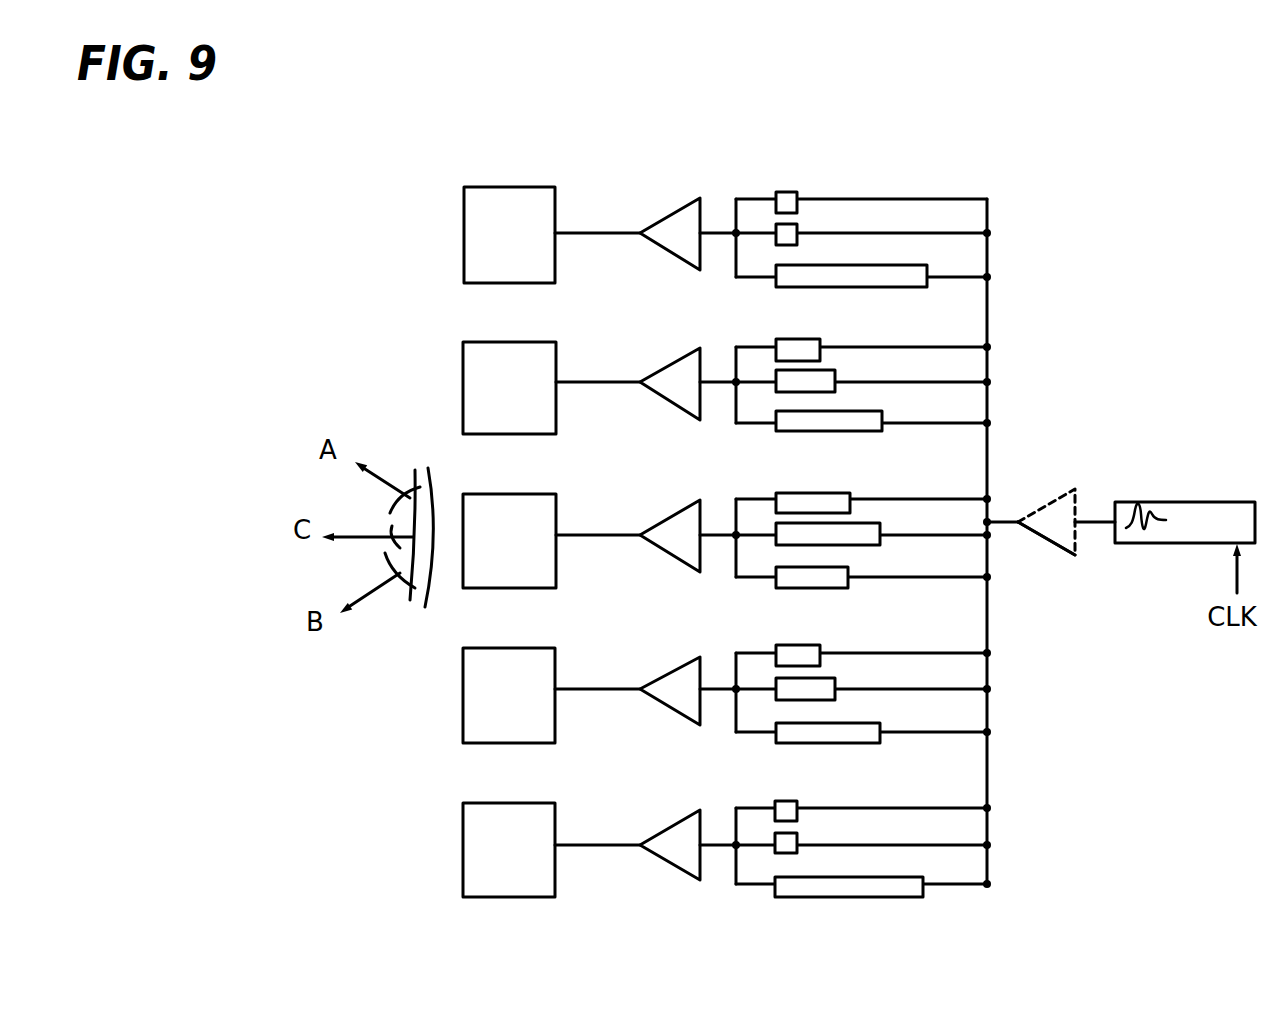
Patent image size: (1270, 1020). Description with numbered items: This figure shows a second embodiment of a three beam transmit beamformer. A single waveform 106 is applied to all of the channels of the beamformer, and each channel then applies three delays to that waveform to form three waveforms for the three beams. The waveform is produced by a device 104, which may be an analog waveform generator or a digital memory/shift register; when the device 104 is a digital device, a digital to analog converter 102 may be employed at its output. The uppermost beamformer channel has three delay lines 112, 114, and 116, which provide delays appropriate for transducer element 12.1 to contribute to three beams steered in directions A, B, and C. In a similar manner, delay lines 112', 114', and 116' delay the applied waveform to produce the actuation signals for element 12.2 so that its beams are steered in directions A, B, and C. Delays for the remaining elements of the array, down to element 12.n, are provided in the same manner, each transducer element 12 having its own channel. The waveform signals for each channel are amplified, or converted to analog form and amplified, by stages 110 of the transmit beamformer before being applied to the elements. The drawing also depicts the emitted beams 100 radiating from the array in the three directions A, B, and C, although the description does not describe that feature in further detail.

The transducer element 12 is at (507, 182).
The transducer element 12.1 is at (464, 231).
The element 12.2 is at (463, 378).
The element 12.n is at (463, 853).
The stages 110 is at (670, 204).
The delay line 112 is at (795, 146).
The delay line 114 is at (847, 202).
The delay line 116 is at (851, 297).
The delay line 112' is at (749, 328).
The delay line 114' is at (869, 370).
The delay line 116' is at (849, 441).
The ultrasound beam / wave 100 is at (400, 607).
The digital to analog converter 102 is at (1040, 537).
The device 104 is at (1208, 502).
The waveform 106 is at (1142, 489).